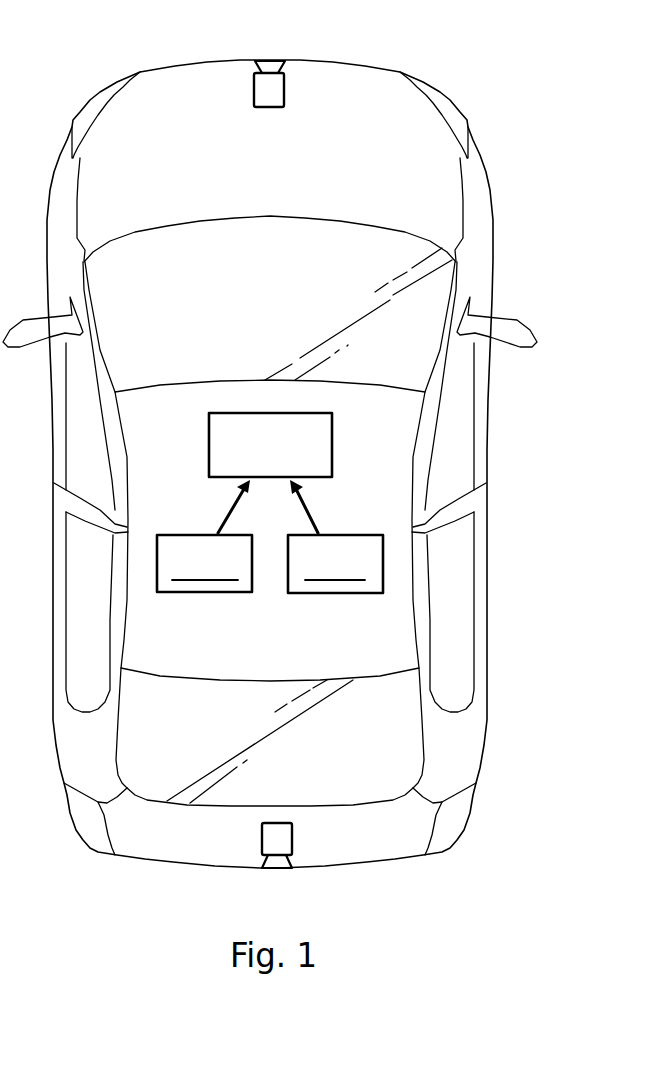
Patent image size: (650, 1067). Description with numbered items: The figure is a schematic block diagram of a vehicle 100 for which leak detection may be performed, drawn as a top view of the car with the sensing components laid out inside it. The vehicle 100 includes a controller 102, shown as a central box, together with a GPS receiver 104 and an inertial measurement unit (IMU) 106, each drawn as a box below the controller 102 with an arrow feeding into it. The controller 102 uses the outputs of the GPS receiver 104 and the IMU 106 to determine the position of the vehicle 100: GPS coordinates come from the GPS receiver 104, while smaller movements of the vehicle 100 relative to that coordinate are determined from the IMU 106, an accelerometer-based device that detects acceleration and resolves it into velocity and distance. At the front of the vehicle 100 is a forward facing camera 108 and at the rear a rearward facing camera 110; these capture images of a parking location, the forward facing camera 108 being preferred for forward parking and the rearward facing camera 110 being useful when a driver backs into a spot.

The vehicle 100 is at (248, 187).
The controller 102 is at (243, 462).
The GPS receiver 104 is at (173, 535).
The inertial measurement unit (IMU) 106 is at (376, 535).
The forward facing camera 108 is at (253, 92).
The rearward facing camera 110 is at (262, 840).